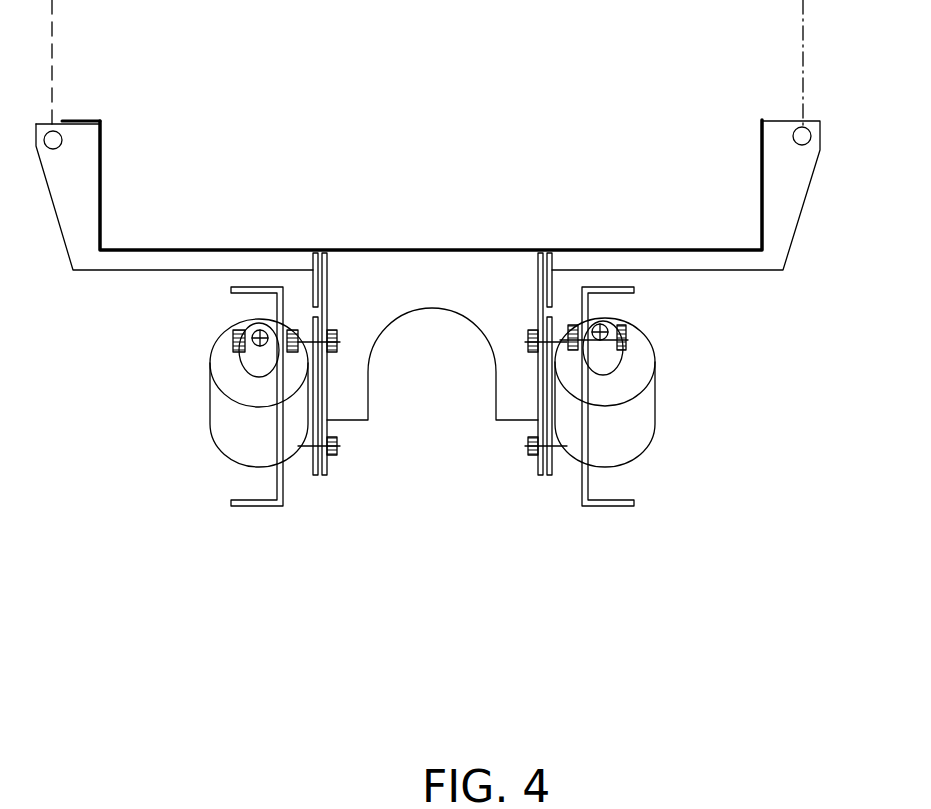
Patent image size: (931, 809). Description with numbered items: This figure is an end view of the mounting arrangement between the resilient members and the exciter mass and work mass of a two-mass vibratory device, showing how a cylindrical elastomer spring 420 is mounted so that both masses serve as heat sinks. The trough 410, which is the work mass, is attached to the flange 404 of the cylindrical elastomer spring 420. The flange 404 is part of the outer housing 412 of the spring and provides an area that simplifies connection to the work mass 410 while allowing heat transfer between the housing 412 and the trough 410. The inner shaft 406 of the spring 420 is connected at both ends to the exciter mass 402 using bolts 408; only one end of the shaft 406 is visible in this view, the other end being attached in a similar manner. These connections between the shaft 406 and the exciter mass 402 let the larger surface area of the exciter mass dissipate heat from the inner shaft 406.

The exciter mass 402 is at (617, 505).
The flange 404 is at (320, 467).
The inner shaft 406 is at (612, 357).
The bolts 408 is at (610, 332).
The trough 410 is at (102, 172).
The outer housing 412 is at (632, 420).
The cylindrical elastomer spring 420 is at (200, 410).